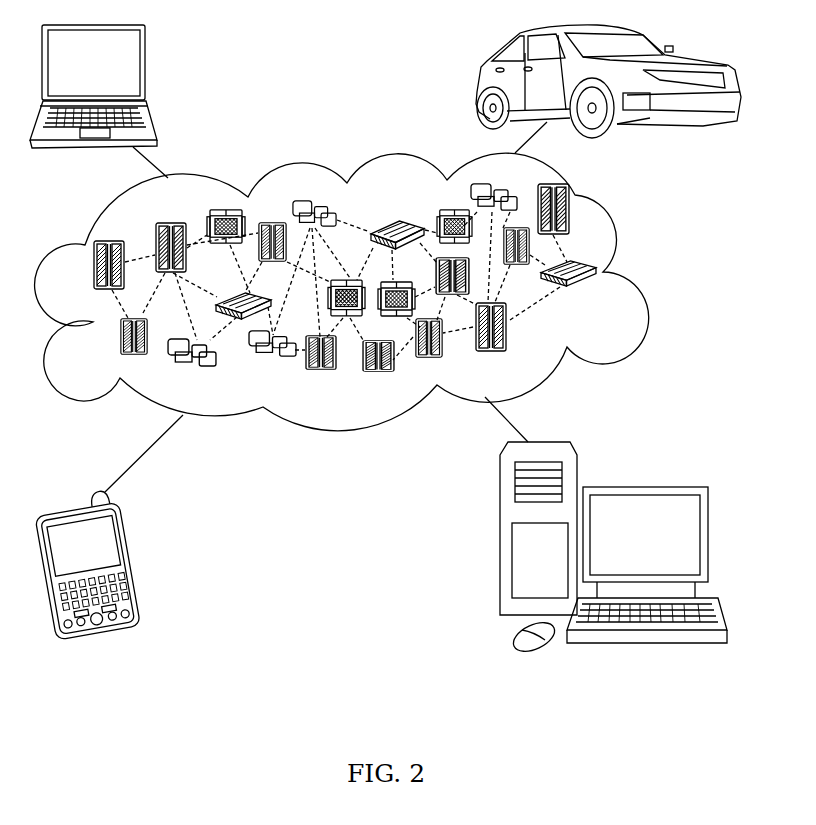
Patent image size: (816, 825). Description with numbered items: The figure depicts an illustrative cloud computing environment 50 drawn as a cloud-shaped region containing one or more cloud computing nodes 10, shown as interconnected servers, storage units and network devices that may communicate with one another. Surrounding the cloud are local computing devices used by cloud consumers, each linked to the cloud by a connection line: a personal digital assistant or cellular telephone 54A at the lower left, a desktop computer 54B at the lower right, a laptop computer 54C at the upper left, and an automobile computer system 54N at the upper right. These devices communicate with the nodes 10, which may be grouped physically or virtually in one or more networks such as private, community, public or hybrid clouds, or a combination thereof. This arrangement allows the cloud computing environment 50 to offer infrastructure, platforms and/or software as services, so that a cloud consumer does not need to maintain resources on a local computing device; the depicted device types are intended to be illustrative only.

The cloud computing nodes 10 is at (598, 294).
The cloud computing environment 50 is at (645, 273).
The personal digital assistant or cellular telephone 54A is at (139, 553).
The desktop computer 54B is at (643, 487).
The laptop computer 54C is at (147, 70).
The automobile computer system 54N is at (477, 82).